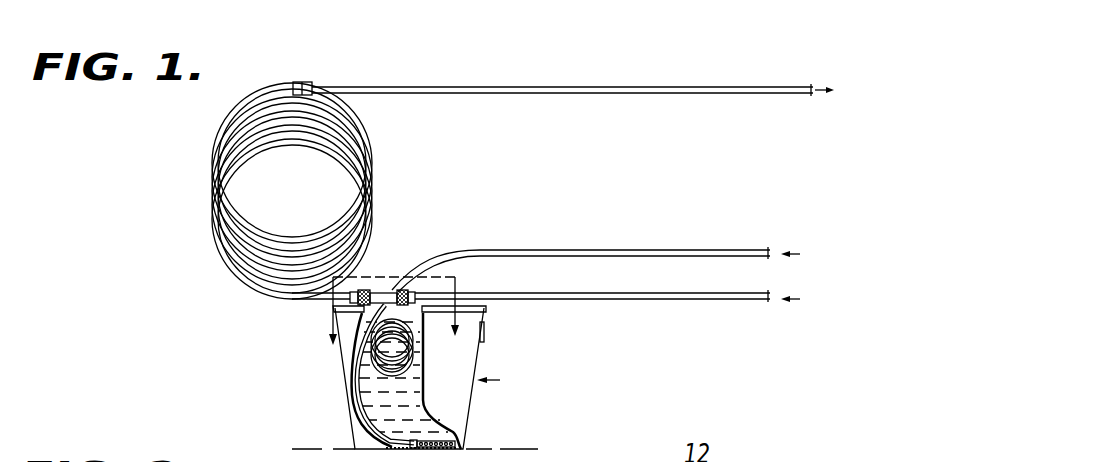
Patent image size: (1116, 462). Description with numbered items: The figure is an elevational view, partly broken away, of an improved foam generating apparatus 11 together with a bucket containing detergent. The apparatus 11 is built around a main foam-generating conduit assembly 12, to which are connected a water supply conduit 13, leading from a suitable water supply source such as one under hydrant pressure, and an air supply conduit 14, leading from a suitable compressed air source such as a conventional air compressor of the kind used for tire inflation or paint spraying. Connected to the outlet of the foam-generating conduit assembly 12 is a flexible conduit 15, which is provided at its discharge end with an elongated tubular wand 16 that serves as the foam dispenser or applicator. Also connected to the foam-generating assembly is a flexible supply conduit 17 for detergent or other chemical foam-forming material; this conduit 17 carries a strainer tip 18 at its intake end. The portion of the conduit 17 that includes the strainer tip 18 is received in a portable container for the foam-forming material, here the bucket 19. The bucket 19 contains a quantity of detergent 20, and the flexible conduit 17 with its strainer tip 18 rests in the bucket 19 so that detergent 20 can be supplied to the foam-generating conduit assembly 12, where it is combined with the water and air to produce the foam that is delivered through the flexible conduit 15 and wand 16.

The foam generating apparatus 11 is at (186, 264).
The main foam-generating conduit assembly 12 is at (381, 290).
The water supply conduit 13 is at (641, 300).
The air supply conduit 14 is at (568, 250).
The flexible conduit 15 is at (268, 297).
The elongated tubular wand 16 is at (510, 88).
The flexible supply conduit 17 is at (423, 350).
The strainer tip 18 is at (448, 434).
The bucket 19 is at (478, 358).
The detergent 20 is at (420, 327).